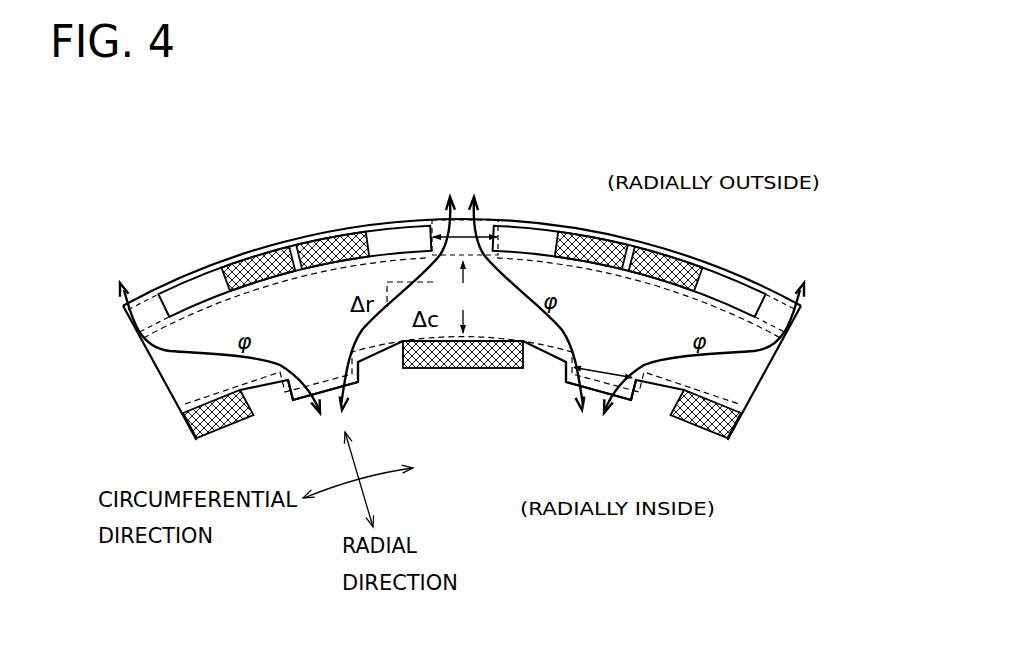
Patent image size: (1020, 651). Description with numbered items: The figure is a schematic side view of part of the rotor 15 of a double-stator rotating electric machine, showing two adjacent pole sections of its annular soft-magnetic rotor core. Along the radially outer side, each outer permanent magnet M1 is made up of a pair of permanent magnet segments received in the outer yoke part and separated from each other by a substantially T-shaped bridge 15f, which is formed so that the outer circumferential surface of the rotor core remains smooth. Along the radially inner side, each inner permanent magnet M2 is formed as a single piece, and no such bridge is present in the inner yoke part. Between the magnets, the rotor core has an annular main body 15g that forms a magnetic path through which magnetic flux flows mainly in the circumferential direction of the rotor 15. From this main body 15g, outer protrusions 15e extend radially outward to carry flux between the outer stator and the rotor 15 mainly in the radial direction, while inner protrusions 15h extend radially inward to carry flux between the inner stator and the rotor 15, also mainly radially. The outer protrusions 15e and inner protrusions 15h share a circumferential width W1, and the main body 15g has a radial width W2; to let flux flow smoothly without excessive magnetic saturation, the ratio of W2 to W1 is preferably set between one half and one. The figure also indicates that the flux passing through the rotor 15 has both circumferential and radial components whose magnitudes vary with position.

The rotor 15 is at (271, 218).
The outer protrusion 15e is at (148, 345).
The bridge 15f is at (311, 240).
The main body 15g is at (182, 365).
The inner protrusion 15h is at (366, 377).
The outer permanent magnet M1 is at (302, 273).
The inner permanent magnet M2 is at (224, 422).
The circumferential width W1 is at (460, 236).
The radial width W2 is at (464, 297).